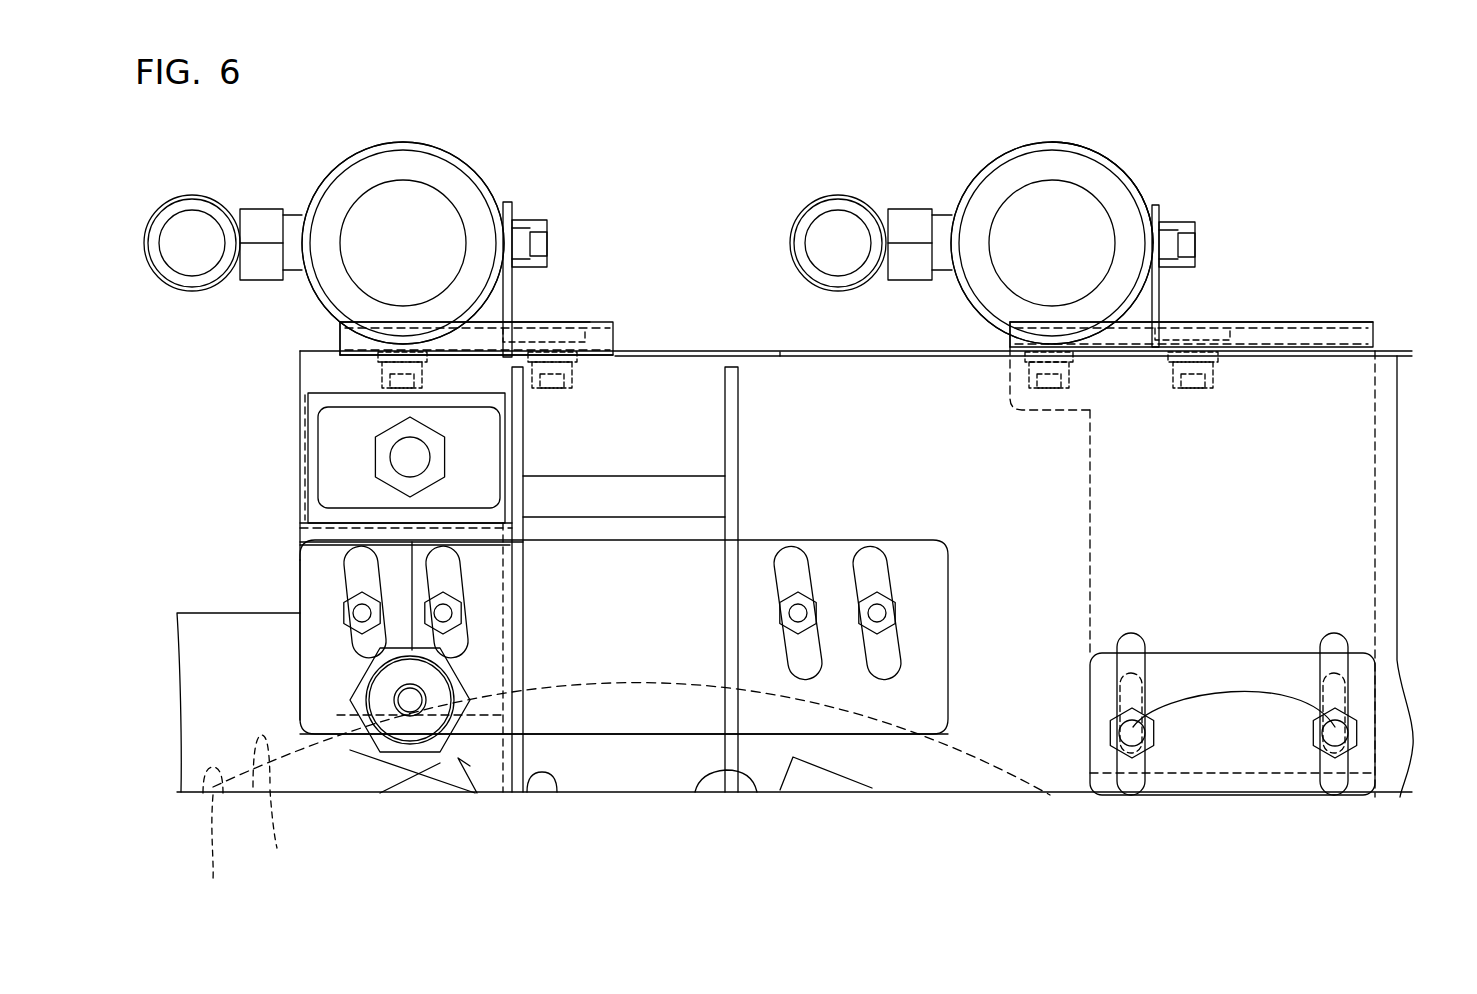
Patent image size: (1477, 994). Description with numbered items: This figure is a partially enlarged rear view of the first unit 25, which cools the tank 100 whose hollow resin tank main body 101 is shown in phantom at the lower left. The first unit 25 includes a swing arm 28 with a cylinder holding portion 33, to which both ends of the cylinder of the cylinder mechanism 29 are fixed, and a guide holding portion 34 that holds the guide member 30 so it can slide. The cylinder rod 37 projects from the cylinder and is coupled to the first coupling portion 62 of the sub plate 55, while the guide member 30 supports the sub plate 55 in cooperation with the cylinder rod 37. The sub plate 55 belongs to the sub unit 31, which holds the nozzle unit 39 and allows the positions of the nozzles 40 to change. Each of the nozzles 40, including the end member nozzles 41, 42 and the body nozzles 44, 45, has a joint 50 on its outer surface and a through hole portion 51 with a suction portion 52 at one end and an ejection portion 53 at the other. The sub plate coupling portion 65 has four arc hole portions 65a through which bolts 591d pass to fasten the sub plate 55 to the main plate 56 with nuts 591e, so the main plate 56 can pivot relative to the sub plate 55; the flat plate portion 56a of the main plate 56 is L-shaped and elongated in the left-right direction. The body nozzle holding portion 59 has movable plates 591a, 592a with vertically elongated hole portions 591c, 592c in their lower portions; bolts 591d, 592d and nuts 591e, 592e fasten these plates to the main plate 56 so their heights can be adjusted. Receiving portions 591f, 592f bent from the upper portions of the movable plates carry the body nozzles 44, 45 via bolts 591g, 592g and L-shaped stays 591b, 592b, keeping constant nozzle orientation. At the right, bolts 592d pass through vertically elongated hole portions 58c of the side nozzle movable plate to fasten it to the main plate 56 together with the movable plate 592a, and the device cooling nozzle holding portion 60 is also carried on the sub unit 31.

The first unit 25 is at (1357, 197).
The swing arm 28 is at (757, 793).
The cylinder mechanism 29 is at (440, 760).
The guide member 30 is at (400, 457).
The sub unit 31 is at (1375, 337).
The cylinder holding portion 33 is at (532, 788).
The guide holding portion 34 is at (318, 497).
The cylinder rod 37 is at (400, 748).
The nozzle unit 39 is at (1100, 145).
The nozzles 40 is at (433, 826).
The end member nozzle 41 is at (415, 795).
The end member nozzle 42 is at (812, 788).
The body nozzle 44 is at (412, 143).
The body nozzle 45 is at (1048, 142).
The joint 50 is at (205, 197).
The through hole portion 51 is at (430, 190).
The suction portion 52 is at (462, 200).
The ejection portion 53 is at (508, 228).
The sub plate 55 is at (308, 410).
The main plate 56 is at (645, 352).
The flat plate portion 56a is at (780, 368).
The vertically elongated hole portions 58c is at (1340, 850).
The body nozzle holding portion 59 is at (608, 310).
The device cooling nozzle holding portion 60 is at (945, 655).
The first coupling portion 62 is at (440, 748).
The sub plate coupling portion 65 is at (345, 608).
The arc hole portions 65a is at (445, 556).
The tank 100 is at (620, 794).
The tank main body 101 is at (278, 805).
The movable plate 591a is at (590, 322).
The stay 591b is at (562, 320).
The vertically elongated hole portions 591c is at (380, 565).
The bolts 591d is at (352, 604).
The nuts 591e is at (352, 652).
The receiving portion 591f is at (345, 322).
The bolt 591g is at (400, 378).
The movable plate 592a is at (1258, 322).
The stay 592b is at (1162, 300).
The vertically elongated hole portions 592c is at (1334, 633).
The bolts 592d is at (1133, 727).
The nuts 592e is at (1335, 733).
The receiving portion 592f is at (1020, 322).
The bolt 592g is at (1073, 373).